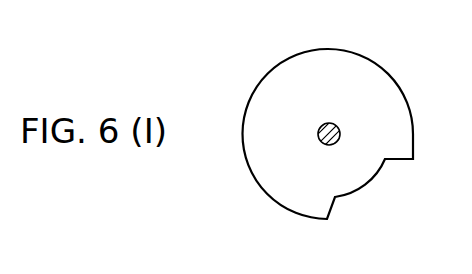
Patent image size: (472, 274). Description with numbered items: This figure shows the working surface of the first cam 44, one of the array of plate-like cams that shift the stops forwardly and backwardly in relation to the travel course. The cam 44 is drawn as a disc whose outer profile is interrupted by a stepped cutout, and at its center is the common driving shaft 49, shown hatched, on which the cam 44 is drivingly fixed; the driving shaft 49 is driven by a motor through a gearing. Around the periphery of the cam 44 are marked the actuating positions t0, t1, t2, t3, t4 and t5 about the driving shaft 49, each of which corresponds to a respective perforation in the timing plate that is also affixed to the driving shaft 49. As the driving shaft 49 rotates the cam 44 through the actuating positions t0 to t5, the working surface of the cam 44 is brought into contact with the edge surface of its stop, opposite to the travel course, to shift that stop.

The cam 44 is at (383, 100).
The driving shaft 49 is at (328, 122).
The actuating position t0 is at (418, 137).
The actuating position t1 is at (384, 203).
The actuating position t2 is at (313, 225).
The actuating position t3 is at (253, 182).
The actuating position t4 is at (245, 100).
The actuating position t5 is at (303, 48).